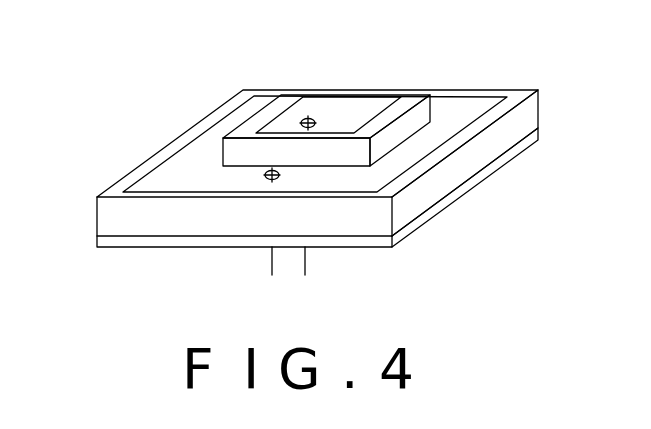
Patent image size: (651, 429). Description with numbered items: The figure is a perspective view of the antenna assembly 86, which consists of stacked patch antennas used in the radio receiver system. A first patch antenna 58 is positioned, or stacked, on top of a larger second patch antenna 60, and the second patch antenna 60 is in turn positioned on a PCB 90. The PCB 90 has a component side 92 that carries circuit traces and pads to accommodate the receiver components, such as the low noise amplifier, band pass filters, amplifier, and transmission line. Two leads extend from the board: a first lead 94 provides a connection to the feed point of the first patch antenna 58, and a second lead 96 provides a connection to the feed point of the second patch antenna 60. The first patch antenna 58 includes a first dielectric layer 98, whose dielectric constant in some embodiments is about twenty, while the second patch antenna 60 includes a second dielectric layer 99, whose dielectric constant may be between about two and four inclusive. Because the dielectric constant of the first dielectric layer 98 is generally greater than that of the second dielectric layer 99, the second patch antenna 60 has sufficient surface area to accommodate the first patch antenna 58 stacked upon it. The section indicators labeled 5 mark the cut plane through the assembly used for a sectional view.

The antenna assembly 86 is at (168, 83).
The first patch antenna 58 is at (310, 107).
The section line of FIG. 5 is at (193, 287).
The second patch antenna 60 is at (477, 108).
The first dielectric layer 98 is at (242, 153).
The second dielectric layer 99 is at (115, 218).
The PCB 90 is at (470, 181).
The component side 92 is at (410, 234).
The first lead 94 is at (305, 262).
The second lead 96 is at (272, 258).